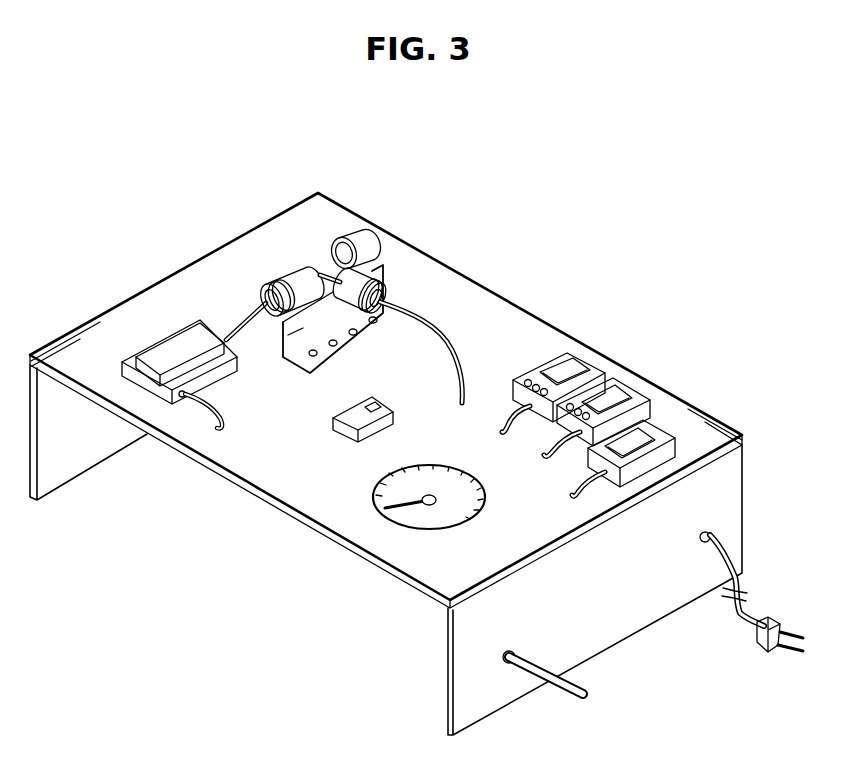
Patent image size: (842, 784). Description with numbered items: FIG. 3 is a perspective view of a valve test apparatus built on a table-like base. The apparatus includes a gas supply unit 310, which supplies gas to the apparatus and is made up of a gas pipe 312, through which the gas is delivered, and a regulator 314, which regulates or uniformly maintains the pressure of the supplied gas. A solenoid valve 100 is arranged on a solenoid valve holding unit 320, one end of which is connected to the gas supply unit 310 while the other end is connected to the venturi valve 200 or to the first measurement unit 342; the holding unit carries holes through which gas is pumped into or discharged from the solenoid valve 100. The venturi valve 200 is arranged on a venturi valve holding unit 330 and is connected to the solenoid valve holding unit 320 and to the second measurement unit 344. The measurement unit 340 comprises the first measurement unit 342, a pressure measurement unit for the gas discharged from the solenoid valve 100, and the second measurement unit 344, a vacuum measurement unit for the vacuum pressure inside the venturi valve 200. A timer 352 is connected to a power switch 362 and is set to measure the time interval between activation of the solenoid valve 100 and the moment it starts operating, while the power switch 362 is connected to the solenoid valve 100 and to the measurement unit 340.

The solenoid valve 100 is at (168, 355).
The venturi valve 200 is at (360, 243).
The gas supply unit 310 is at (683, 693).
The gas pipe 312 is at (568, 696).
The regulator 314 is at (457, 516).
The solenoid valve holding unit 320 is at (163, 392).
The venturi valve holding unit 330 is at (283, 348).
The measurement unit 340 is at (585, 323).
The first measurement unit 342 is at (568, 375).
The second measurement unit 344 is at (611, 376).
The timer 352 is at (643, 462).
The power switch 362 is at (333, 430).